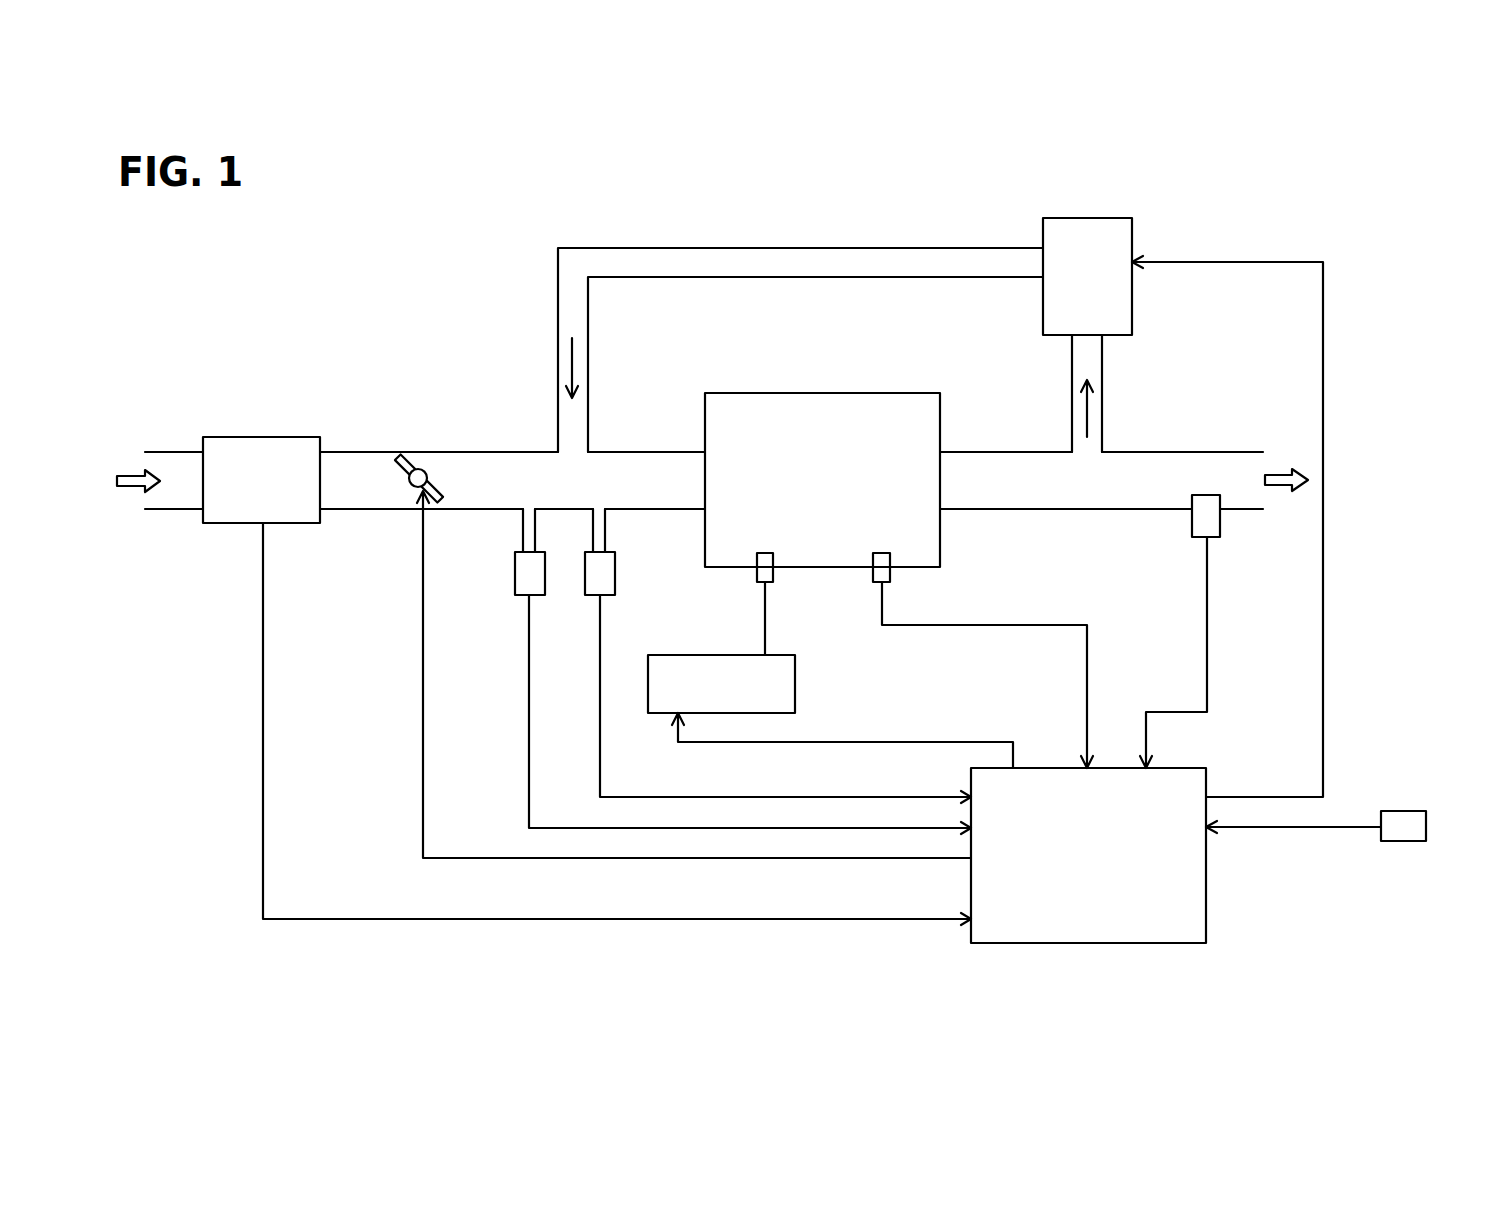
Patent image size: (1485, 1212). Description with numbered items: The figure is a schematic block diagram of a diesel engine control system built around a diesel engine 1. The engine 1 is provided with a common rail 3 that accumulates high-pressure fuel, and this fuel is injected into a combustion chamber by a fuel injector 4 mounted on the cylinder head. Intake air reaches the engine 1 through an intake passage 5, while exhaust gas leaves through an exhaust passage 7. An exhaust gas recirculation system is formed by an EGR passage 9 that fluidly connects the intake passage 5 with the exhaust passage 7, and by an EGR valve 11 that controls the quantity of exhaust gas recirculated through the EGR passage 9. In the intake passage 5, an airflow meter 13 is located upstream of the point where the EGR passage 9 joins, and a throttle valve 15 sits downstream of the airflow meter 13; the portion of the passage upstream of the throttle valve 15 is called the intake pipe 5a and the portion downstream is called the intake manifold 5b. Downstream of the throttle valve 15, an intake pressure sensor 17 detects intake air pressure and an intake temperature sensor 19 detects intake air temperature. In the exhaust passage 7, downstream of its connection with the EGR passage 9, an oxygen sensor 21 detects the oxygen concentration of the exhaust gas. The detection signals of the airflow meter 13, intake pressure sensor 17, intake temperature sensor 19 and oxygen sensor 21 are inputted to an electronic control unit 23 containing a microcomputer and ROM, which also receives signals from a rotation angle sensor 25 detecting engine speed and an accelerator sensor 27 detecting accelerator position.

The diesel engine 1 is at (822, 393).
The common rail 3 is at (795, 680).
The fuel injector 4 is at (757, 570).
The intake passage 5 is at (426, 452).
The intake pipe 5a is at (345, 452).
The intake manifold 5b is at (527, 452).
The exhaust passage 7 is at (1162, 452).
The EGR passage 9 is at (850, 248).
The EGR valve 11 is at (1097, 218).
The airflow meter 13 is at (262, 440).
The throttle valve 15 is at (428, 472).
The intake pressure sensor 17 is at (515, 575).
The intake temperature sensor 19 is at (615, 565).
The oxygen sensor 21 is at (1192, 520).
The electronic control unit 23 is at (1206, 898).
The rotation angle sensor 25 is at (873, 570).
The accelerator sensor 27 is at (1400, 811).